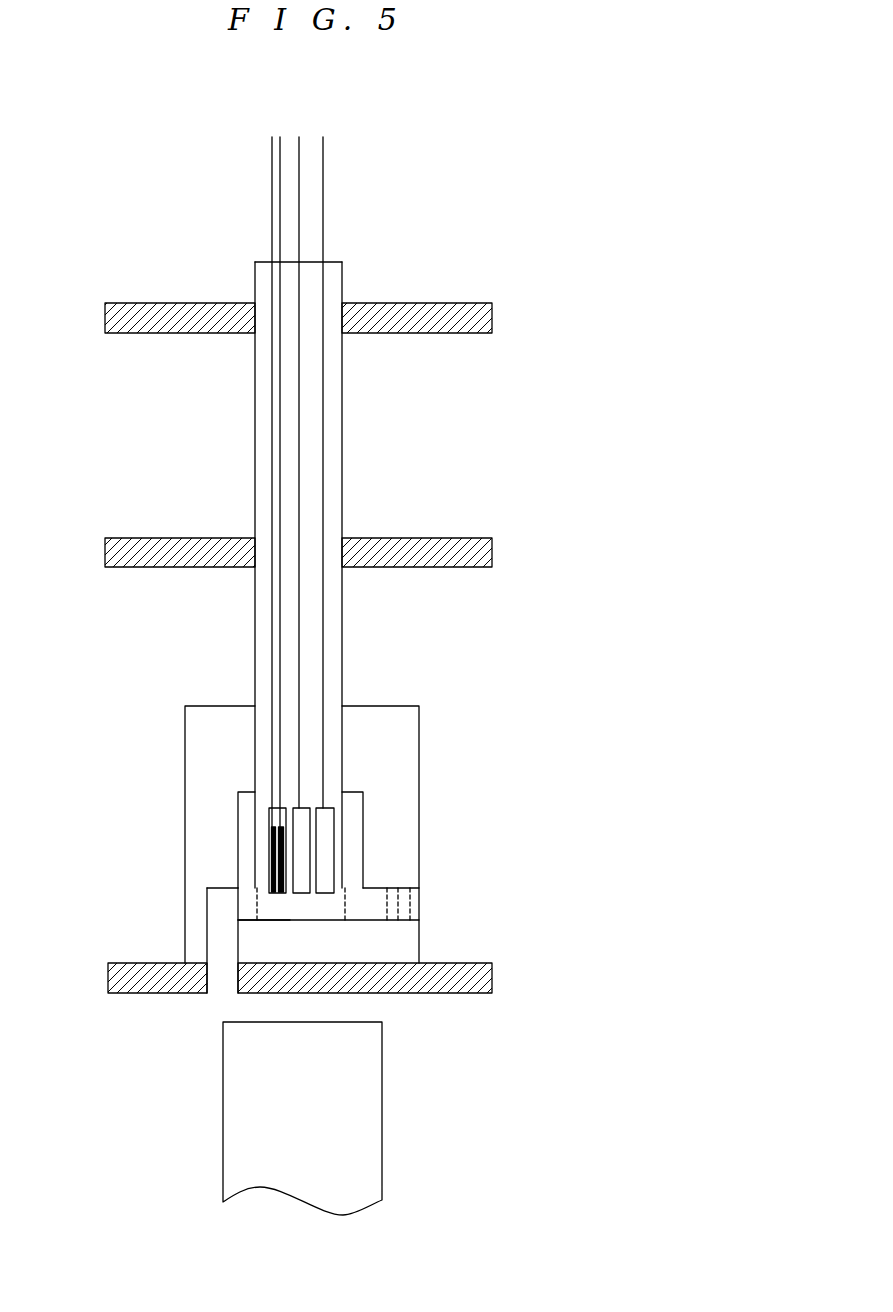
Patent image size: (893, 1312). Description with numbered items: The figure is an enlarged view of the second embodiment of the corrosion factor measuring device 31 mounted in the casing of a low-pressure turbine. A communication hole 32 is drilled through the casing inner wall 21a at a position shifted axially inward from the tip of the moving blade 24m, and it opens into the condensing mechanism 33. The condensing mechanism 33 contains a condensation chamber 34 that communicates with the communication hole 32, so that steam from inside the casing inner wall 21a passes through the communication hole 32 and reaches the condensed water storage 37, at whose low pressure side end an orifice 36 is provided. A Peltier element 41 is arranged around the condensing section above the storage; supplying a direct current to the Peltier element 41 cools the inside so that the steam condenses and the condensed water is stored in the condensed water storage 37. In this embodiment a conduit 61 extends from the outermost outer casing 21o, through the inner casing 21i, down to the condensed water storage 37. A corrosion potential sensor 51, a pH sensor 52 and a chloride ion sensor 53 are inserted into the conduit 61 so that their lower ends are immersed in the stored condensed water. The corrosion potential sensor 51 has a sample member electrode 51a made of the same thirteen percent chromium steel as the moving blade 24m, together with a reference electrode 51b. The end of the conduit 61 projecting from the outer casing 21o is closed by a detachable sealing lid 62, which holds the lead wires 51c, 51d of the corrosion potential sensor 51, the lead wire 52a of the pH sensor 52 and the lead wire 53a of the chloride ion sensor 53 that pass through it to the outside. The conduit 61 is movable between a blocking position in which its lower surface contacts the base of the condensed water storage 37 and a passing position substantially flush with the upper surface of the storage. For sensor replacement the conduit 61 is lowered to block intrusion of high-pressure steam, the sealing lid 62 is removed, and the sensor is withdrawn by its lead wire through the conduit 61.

The outer casing 21o is at (447, 303).
The inner casing 21i is at (437, 538).
The inner wall of the casing 21a is at (453, 993).
The moving blade 24m is at (383, 1095).
The corrosion factor measuring device 31 is at (249, 804).
The communication hole 32 is at (222, 975).
The condensing mechanism 33 is at (173, 753).
The condensation chamber 34 is at (370, 924).
The orifice 36 is at (410, 895).
The condensed water storage 37 is at (333, 912).
The Peltier element 41 is at (238, 813).
The corrosion potential sensor 51 is at (204, 871).
The sample member electrode 51a is at (273, 835).
The reference electrode 51b is at (283, 860).
The lead wire 51c is at (272, 167).
The lead wire 51d is at (280, 197).
The pH sensor 52 is at (307, 808).
The lead wire of the pH sensor 52a is at (299, 188).
The chloride ion sensor 53 is at (334, 818).
The lead wire of the chloride ion sensor 53a is at (323, 148).
The conduit 61 is at (334, 558).
The sealing lid 62 is at (330, 262).